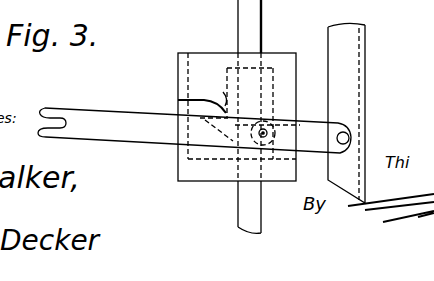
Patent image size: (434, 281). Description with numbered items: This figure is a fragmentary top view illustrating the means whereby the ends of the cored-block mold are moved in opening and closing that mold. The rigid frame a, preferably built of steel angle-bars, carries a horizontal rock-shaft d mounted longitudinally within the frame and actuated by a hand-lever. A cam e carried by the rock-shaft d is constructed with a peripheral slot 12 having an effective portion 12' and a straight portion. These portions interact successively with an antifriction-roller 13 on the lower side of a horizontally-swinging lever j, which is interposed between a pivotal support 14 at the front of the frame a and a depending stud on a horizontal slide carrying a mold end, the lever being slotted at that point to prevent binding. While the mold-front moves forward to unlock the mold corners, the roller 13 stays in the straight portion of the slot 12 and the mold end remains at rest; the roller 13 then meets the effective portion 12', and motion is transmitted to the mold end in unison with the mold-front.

The cam e is at (204, 56).
The rock-shaft d is at (257, 30).
The frame a is at (345, 75).
The horizontally-swinging lever j is at (111, 115).
The peripheral slot 12 is at (186, 97).
The effective portion 12' is at (211, 91).
The antifriction-roller 13 is at (267, 129).
The pivotal support 14 is at (349, 138).